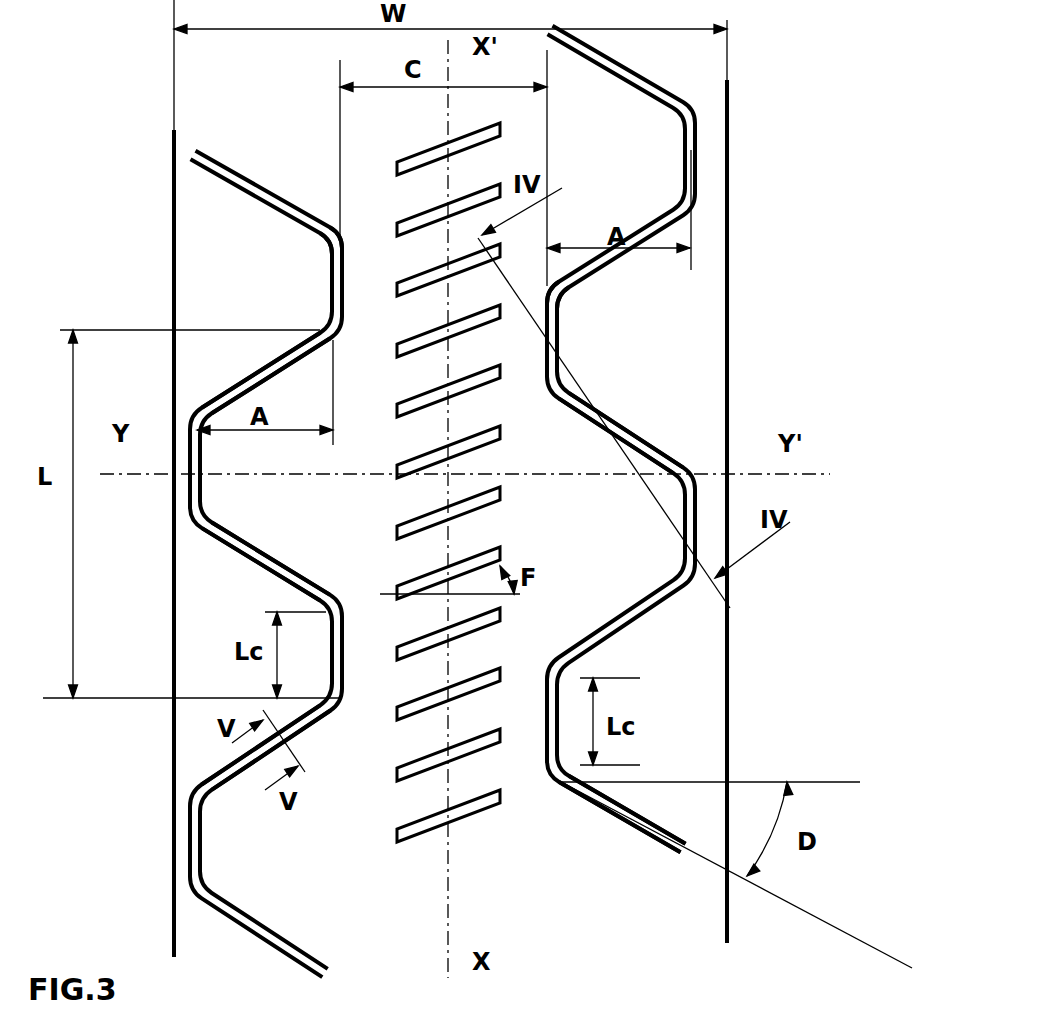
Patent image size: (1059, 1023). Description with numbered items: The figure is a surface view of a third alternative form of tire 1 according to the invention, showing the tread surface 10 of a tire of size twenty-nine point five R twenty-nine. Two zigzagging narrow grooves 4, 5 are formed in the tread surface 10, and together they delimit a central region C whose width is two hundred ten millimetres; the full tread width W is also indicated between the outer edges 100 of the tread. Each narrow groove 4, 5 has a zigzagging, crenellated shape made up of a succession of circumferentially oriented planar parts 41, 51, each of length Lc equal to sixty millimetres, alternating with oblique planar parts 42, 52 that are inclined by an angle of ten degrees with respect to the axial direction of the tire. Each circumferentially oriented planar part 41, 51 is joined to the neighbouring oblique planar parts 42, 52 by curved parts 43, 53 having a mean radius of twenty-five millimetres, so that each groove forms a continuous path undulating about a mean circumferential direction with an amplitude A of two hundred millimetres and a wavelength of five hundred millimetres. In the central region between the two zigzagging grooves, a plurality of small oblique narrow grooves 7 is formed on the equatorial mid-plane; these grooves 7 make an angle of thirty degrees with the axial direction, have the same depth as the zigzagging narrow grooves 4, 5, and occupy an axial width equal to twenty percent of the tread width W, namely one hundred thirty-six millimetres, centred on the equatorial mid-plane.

The heat exchanger 1 is at (755, 88).
The zigzagging narrow groove 4 is at (267, 190).
The zigzagging narrow groove 5 is at (697, 182).
The small oblique narrow grooves 7 is at (417, 713).
The tread surface 10 is at (259, 255).
The circumferentially oriented planar part 41 is at (190, 494).
The oblique planar part 42 is at (250, 376).
The curved part 43 is at (325, 325).
The circumferentially oriented planar part 51 is at (700, 193).
The oblique planar part 52 is at (645, 446).
The curved part 53 is at (557, 290).
The plate 100 is at (174, 274).